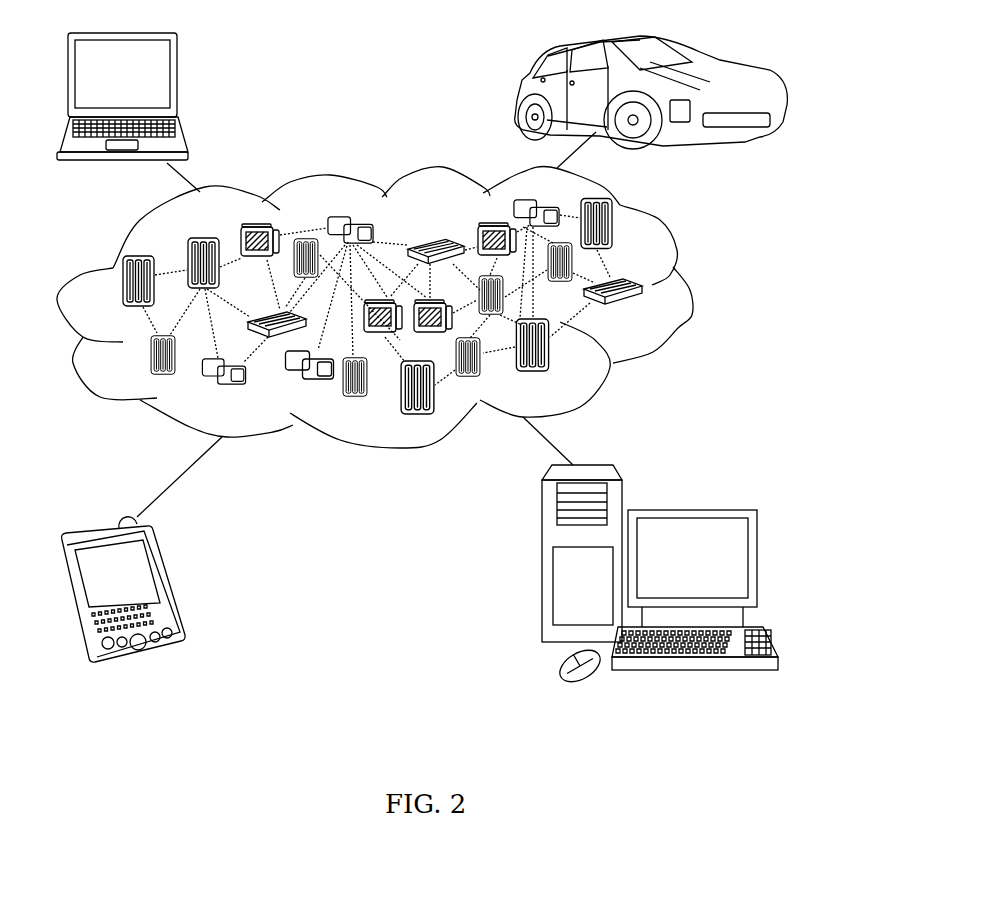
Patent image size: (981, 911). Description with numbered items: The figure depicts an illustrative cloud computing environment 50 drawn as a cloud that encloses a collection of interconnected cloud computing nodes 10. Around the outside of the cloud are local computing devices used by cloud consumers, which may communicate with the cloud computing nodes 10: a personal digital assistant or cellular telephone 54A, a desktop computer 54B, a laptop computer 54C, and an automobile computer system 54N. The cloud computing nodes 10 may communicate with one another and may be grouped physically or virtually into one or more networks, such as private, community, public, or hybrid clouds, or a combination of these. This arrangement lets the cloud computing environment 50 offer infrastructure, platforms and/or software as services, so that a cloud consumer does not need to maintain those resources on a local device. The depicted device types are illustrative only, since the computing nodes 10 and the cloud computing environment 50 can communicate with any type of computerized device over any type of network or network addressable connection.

The cloud computing node 10 is at (653, 313).
The cloud computing environment 50 is at (692, 288).
The personal digital assistant or cellular telephone 54A is at (170, 583).
The desktop computer 54B is at (703, 493).
The laptop computer 54C is at (178, 80).
The automobile computer system 54N is at (517, 92).